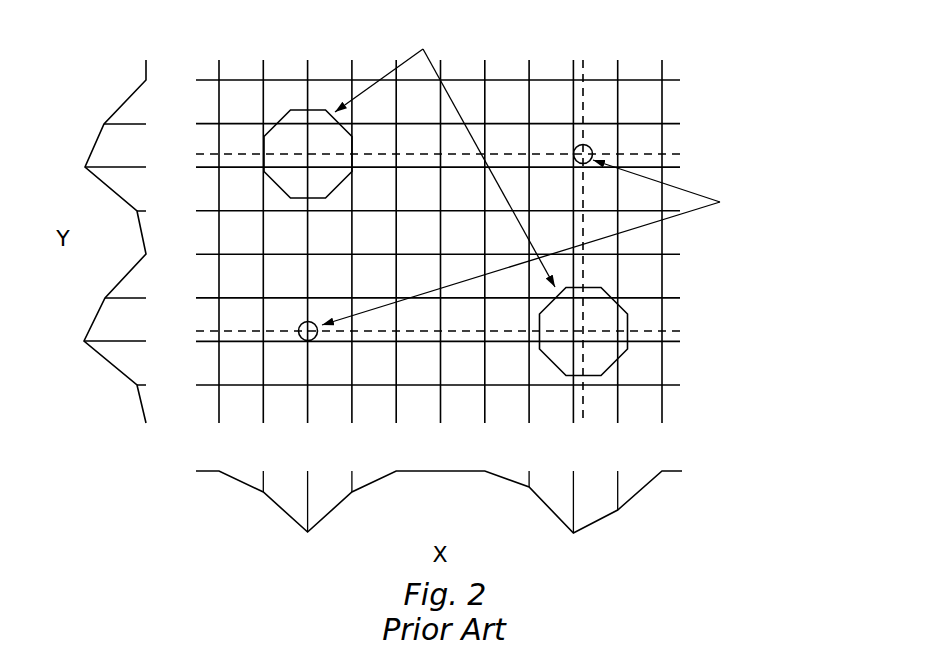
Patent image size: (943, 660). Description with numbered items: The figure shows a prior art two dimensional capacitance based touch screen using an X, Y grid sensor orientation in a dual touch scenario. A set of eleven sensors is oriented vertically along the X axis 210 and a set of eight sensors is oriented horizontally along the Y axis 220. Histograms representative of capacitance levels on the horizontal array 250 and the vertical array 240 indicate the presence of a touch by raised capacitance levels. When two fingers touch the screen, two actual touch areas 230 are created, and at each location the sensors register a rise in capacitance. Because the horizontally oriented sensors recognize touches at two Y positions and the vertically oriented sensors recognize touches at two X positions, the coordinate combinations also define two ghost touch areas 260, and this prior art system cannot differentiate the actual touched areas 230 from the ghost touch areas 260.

The X axis 210 is at (677, 440).
The Y axis 220 is at (183, 402).
The actual touch areas 230 is at (491, 15).
The vertical array 240 is at (328, 512).
The horizontal array 250 is at (98, 355).
The ghost touch areas 260 is at (772, 236).